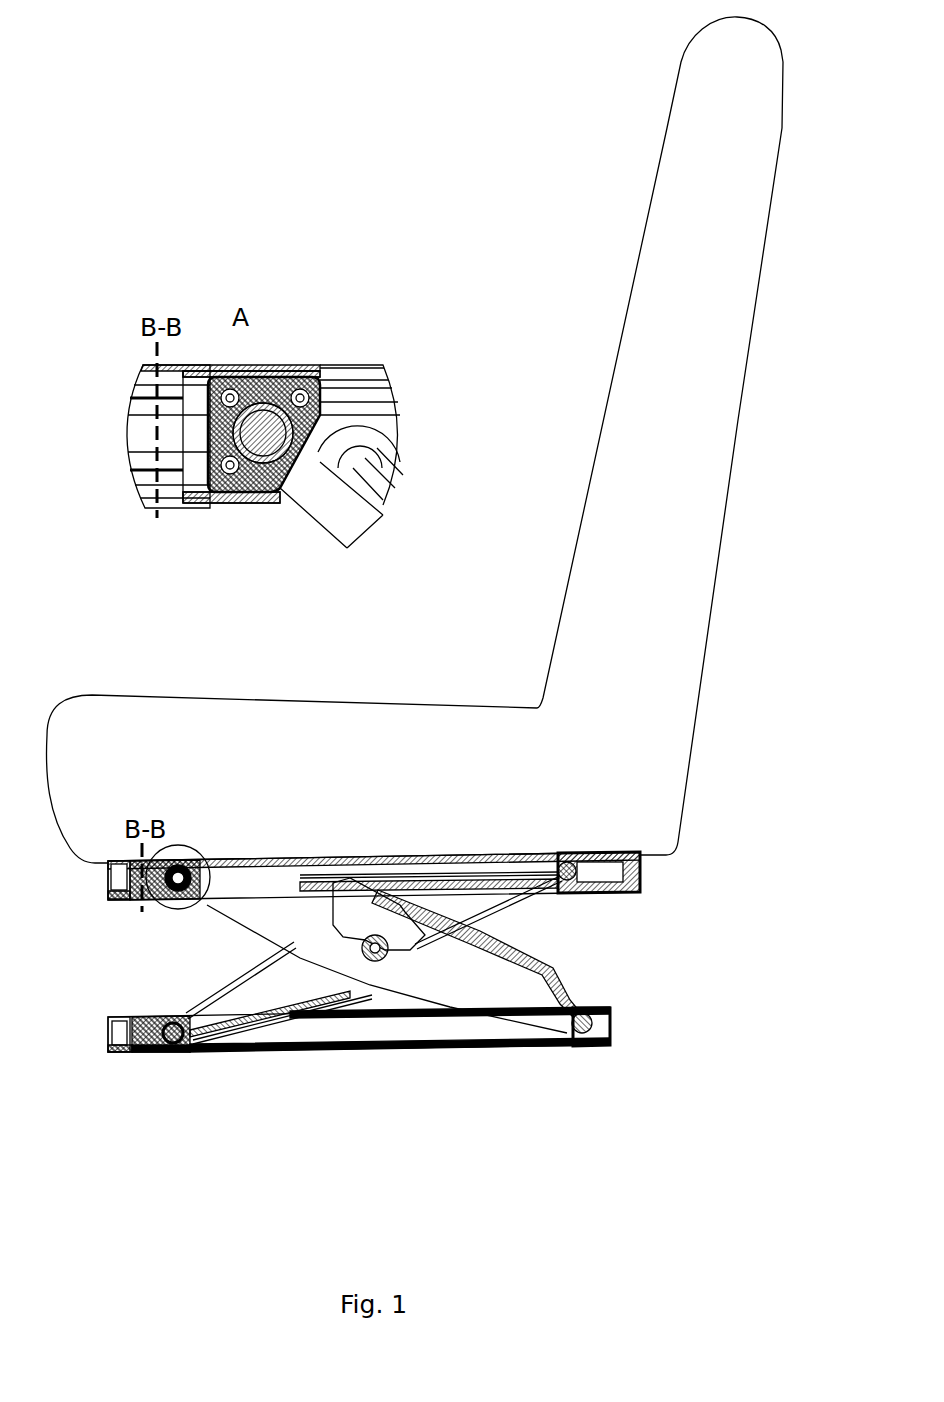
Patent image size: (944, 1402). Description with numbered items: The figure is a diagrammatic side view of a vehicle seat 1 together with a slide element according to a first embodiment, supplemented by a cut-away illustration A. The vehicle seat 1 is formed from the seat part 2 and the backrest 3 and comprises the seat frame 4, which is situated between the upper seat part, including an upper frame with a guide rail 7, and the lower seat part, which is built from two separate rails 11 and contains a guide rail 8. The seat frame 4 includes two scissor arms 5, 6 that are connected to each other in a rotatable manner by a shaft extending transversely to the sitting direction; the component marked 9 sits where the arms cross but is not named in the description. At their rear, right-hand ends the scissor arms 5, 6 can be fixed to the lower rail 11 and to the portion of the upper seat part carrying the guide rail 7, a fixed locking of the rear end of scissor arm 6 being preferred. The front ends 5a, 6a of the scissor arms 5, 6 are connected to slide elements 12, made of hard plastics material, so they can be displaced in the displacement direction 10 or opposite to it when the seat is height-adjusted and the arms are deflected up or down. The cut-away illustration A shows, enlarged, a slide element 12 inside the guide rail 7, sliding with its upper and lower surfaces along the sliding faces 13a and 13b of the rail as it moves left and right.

The vehicle seat 1 is at (495, 333).
The seat part 2 is at (378, 752).
The backrest 3 is at (633, 478).
The seat frame 4 is at (655, 957).
The scissor arm 5 is at (522, 888).
The front end of scissor arm 5a is at (215, 1053).
The scissor arm 6 is at (537, 990).
The front end of scissor arm 6a is at (200, 895).
The guide rail 7 is at (150, 880).
The guide rail 8 is at (157, 1053).
The central pivot joint 9 is at (380, 965).
The displacement direction 10 is at (125, 983).
The rail 11 is at (481, 1046).
The slide element 12 is at (280, 372).
The sliding face 13a is at (330, 378).
The sliding face 13b is at (192, 502).